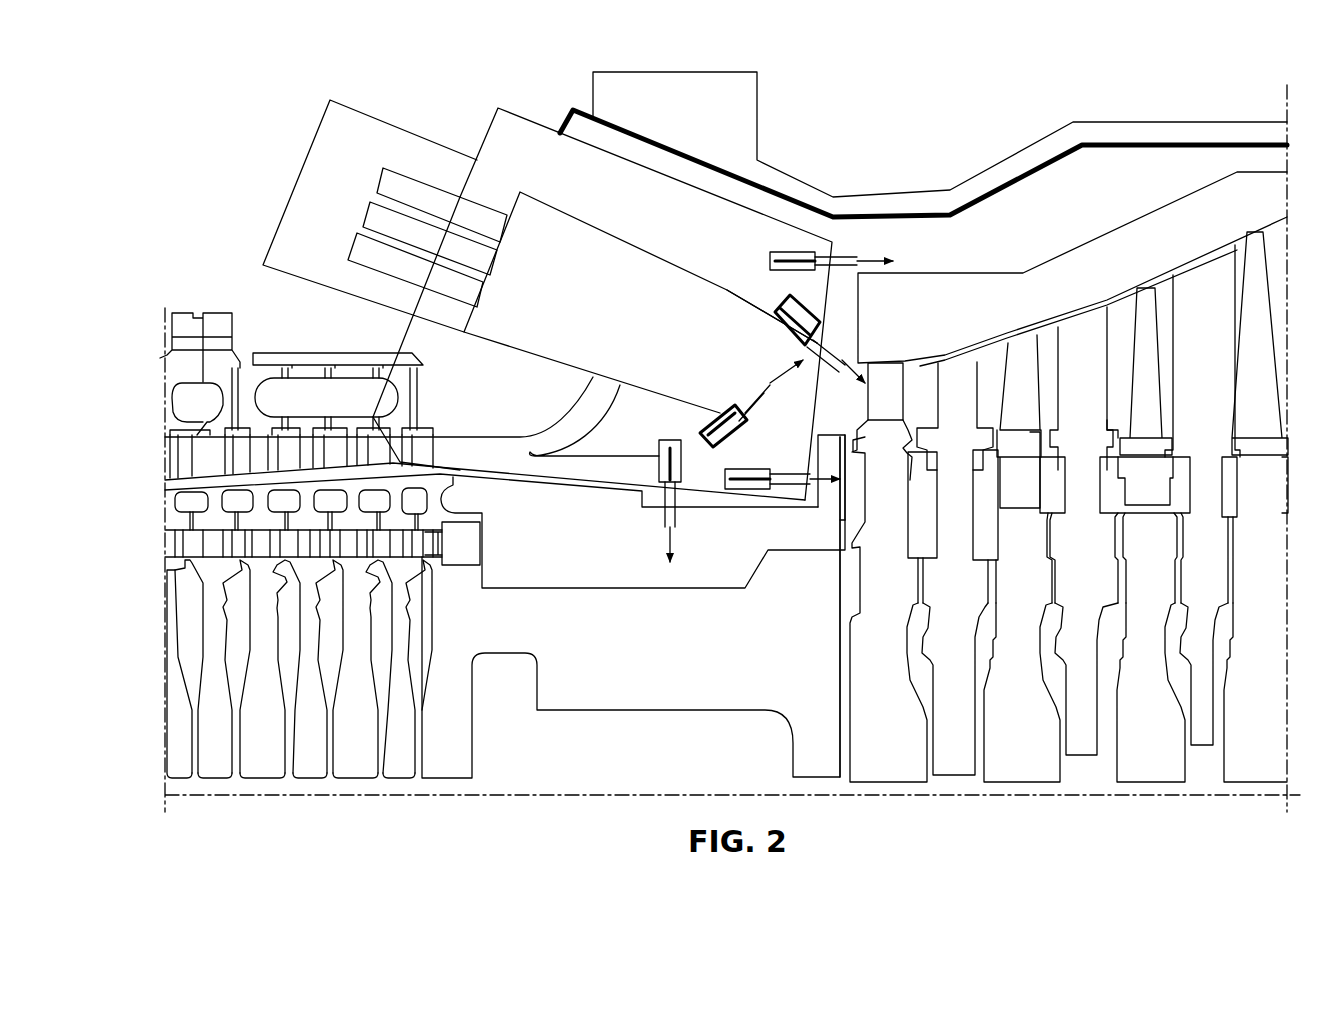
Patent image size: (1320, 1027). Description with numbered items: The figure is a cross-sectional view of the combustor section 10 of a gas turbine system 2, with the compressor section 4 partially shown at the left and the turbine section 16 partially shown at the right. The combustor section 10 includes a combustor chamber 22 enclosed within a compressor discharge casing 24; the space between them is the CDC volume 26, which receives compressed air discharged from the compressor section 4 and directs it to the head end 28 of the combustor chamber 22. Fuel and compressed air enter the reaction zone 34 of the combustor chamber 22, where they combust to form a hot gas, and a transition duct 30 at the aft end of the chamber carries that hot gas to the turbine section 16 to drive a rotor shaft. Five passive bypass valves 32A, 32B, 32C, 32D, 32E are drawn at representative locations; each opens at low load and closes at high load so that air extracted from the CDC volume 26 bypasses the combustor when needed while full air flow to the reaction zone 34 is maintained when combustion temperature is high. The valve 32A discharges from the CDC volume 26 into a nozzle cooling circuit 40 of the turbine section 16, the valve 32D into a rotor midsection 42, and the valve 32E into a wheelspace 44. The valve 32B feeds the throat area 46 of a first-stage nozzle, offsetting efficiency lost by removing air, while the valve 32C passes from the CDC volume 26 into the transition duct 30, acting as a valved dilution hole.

The gas turbine system 2 is at (522, 77).
The compressor section 4 is at (380, 792).
The combustor section 10 is at (235, 258).
The turbine section 16 is at (948, 792).
The combustor chamber 22 is at (592, 378).
The compressor discharge casing 24 is at (510, 478).
The CDC volume 26 is at (660, 218).
The head end 28 is at (470, 315).
The transition duct 30 is at (735, 305).
The passive bypass valve 32A is at (790, 255).
The passive bypass valve 32B is at (800, 330).
The passive bypass valve 32C is at (722, 422).
The passive bypass valve 32D is at (660, 447).
The passive bypass valve 32E is at (745, 470).
The reaction zone 34 is at (572, 255).
The nozzle cooling circuit 40 is at (938, 258).
The rotor midsection 42 is at (655, 565).
The wheelspace 44 is at (852, 490).
The throat area 46 is at (850, 398).